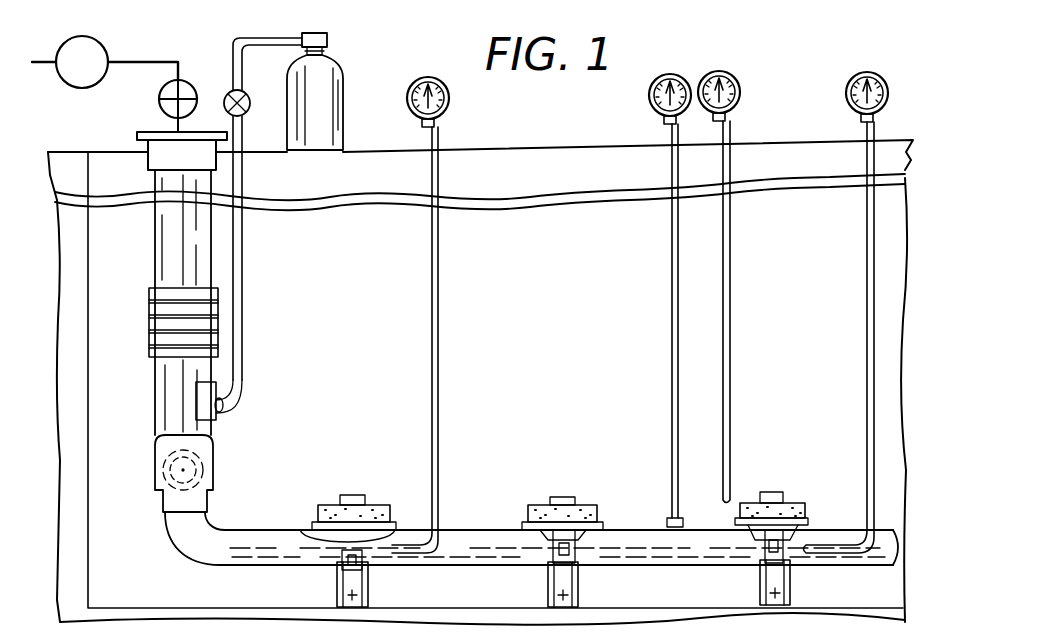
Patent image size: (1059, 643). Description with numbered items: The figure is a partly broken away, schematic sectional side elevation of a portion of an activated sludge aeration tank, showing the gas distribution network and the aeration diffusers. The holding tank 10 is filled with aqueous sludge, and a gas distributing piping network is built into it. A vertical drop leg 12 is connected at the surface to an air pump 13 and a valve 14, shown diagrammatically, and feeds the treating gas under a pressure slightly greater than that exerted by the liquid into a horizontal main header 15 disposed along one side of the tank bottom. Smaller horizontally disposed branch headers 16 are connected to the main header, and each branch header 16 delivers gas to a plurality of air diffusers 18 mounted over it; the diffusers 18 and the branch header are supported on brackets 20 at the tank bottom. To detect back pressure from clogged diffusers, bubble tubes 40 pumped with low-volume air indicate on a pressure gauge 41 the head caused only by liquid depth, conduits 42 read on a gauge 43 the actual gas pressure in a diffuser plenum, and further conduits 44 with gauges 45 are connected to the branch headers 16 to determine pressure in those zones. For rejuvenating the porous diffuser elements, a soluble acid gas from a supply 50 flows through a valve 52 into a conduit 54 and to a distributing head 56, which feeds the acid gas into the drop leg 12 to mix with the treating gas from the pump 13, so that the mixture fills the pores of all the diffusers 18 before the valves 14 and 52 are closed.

The holding tank 10 is at (90, 312).
The drop leg 12 is at (165, 398).
The air pump 13 is at (58, 75).
The valve 14 is at (160, 99).
The main header 15 is at (160, 476).
The branch header 16 is at (265, 548).
The air diffuser 18 is at (376, 505).
The mounting bracket 20 is at (548, 589).
The bubble tube 40 is at (732, 322).
The pressure gauge 41 is at (742, 84).
The conduit 42 is at (438, 352).
The gauge 43 is at (450, 100).
The conduit 44 is at (672, 353).
The gauge 45 is at (649, 100).
The acid gas supply 50 is at (330, 82).
The valve 52 is at (244, 92).
The conduit 54 is at (246, 278).
The distributing head 56 is at (223, 405).